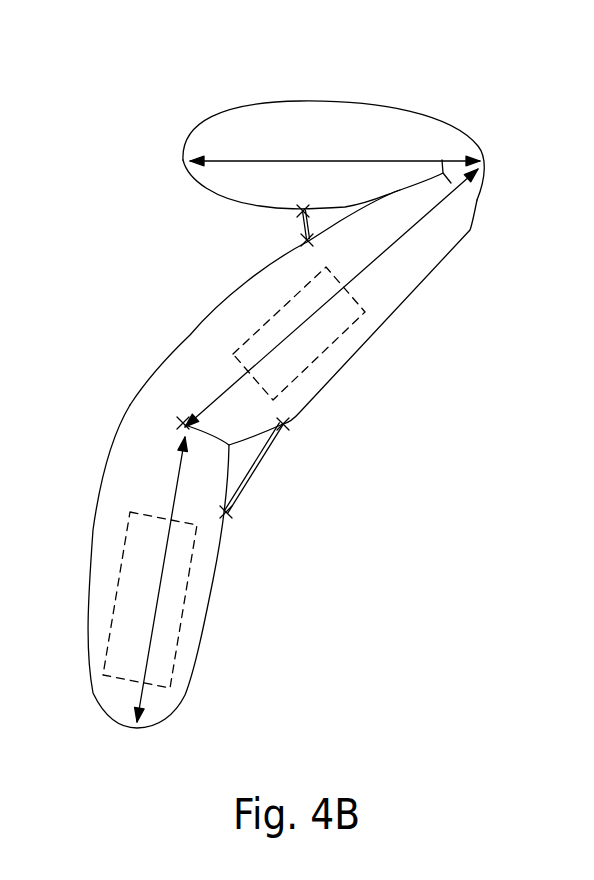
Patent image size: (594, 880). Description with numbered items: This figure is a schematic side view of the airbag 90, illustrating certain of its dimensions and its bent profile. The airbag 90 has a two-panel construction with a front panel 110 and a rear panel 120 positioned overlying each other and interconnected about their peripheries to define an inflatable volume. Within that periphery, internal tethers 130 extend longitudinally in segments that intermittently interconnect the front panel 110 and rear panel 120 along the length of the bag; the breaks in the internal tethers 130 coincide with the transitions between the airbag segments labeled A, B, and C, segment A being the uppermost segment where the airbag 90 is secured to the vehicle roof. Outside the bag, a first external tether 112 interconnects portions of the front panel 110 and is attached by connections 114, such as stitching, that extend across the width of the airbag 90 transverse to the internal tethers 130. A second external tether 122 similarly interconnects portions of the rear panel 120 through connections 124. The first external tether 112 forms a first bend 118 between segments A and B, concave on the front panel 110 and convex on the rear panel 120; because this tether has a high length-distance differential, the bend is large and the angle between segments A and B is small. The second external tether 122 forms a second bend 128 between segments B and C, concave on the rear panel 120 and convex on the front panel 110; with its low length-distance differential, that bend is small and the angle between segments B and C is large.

The airbag 90 is at (173, 98).
The front panel 110 is at (190, 337).
The first external tether 112 is at (306, 227).
The connections 114 is at (301, 209).
The first bend 118 is at (467, 152).
The rear panel 120 is at (350, 362).
The second external tether 122 is at (256, 466).
The connections 124 is at (290, 428).
The second bend 128 is at (150, 415).
The internal tethers 130 is at (272, 296).